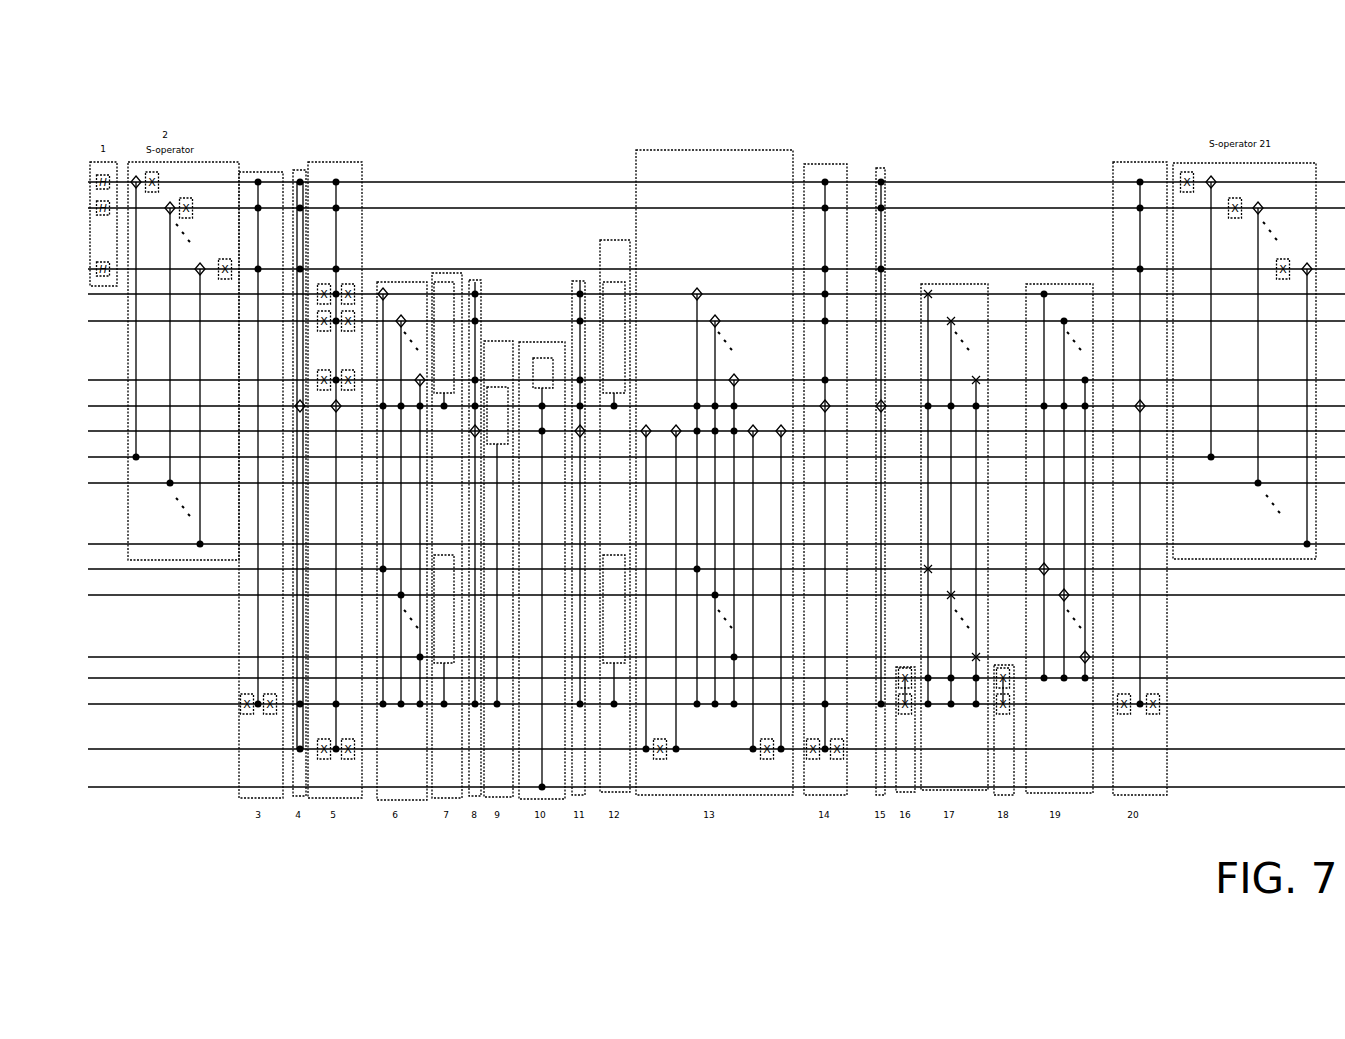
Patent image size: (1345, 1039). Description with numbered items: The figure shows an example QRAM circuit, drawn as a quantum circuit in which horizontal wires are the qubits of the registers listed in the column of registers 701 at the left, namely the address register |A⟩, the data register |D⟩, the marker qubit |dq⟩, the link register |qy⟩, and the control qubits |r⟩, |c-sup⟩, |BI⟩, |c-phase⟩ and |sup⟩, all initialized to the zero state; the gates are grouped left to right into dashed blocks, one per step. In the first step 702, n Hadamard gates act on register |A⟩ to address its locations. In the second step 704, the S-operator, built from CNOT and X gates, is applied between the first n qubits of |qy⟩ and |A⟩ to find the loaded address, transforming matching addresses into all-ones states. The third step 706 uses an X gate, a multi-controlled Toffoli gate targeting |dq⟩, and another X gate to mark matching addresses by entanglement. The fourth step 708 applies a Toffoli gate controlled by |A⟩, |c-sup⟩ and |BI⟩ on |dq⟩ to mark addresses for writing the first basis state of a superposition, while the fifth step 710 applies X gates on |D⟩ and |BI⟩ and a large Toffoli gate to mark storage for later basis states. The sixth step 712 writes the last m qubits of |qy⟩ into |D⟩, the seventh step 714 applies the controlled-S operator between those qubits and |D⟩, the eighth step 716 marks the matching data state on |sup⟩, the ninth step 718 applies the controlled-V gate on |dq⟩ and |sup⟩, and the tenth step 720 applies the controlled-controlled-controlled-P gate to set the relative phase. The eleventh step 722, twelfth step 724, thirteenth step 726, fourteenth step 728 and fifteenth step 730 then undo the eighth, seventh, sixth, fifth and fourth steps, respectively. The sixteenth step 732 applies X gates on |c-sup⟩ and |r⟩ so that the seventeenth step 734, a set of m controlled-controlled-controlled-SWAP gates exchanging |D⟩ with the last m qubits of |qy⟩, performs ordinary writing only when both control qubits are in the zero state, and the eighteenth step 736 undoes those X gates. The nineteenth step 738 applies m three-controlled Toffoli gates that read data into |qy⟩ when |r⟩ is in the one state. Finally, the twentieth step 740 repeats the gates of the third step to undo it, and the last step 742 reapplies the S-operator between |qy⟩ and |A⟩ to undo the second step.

The column of registers 701 is at (67, 142).
The first step 702 is at (105, 310).
The second step 704 is at (197, 110).
The third step 706 is at (261, 850).
The fourth step 708 is at (300, 140).
The fifth step 710 is at (343, 834).
The sixth step 712 is at (395, 252).
The seventh step 714 is at (447, 844).
The eighth step 716 is at (476, 255).
The ninth step 718 is at (498, 832).
The tenth step 720 is at (541, 312).
The eleventh step 722 is at (573, 834).
The twelfth step 724 is at (618, 222).
The thirteenth step 726 is at (717, 844).
The fourteenth step 728 is at (822, 137).
The fifteenth step 730 is at (880, 842).
The sixteenth step 732 is at (909, 656).
The seventeenth step 734 is at (963, 255).
The eighteenth step 736 is at (1003, 832).
The nineteenth step 738 is at (1068, 249).
The twentieth step 740 is at (1135, 852).
The last step 742 is at (1248, 115).